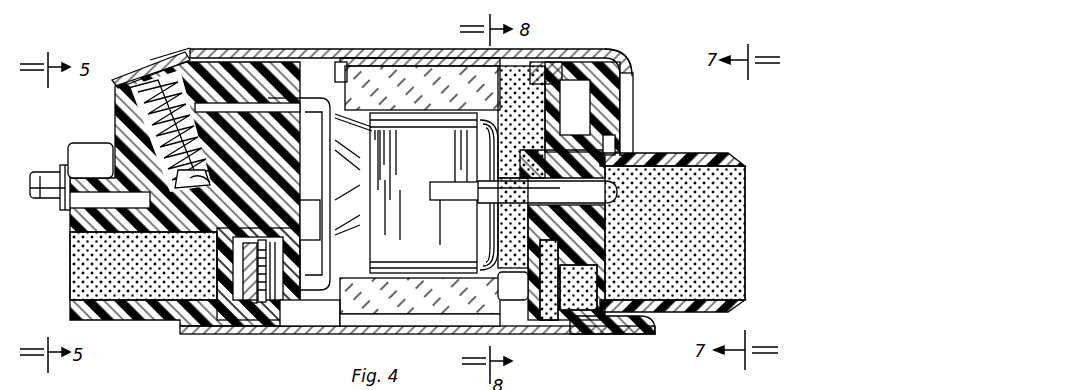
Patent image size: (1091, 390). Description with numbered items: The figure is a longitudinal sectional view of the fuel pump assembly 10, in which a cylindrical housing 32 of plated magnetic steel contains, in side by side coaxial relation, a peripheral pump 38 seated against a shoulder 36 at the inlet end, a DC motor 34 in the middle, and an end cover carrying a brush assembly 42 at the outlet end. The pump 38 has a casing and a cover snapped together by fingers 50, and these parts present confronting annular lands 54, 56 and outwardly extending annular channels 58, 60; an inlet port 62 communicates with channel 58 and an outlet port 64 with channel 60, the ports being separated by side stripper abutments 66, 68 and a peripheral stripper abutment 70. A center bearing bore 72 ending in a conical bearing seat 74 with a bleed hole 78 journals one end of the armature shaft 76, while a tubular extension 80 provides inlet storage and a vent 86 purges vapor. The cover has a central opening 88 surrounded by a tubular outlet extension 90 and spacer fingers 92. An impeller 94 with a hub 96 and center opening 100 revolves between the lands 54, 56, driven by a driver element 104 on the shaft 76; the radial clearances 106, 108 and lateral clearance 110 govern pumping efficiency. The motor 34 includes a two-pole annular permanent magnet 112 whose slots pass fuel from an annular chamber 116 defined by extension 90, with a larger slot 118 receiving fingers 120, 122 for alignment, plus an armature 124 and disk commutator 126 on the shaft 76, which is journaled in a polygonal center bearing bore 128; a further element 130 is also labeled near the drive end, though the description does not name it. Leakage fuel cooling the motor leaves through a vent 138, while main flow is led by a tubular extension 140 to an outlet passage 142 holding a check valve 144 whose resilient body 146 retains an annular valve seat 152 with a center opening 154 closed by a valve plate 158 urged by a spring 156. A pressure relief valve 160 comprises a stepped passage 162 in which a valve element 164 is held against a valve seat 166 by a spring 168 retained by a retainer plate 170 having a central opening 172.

The fuel pump assembly 10 is at (342, 62).
The cylindrical housing 32 is at (282, 62).
The DC motor 34 is at (364, 70).
The shoulder 36 is at (630, 56).
The peripheral pump 38 is at (700, 155).
The brush assembly 42 is at (60, 210).
The fingers 50 is at (535, 320).
The annular land 54 is at (615, 140).
The annular land 56 is at (552, 152).
The annular channel 58 is at (620, 100).
The annular channel 60 is at (525, 118).
The inlet port 62 is at (597, 282).
The outlet port 64 is at (545, 258).
The side stripper abutment 66 is at (618, 324).
The side stripper abutment 68 is at (552, 320).
The peripheral stripper abutment 70 is at (575, 320).
The center bearing bore 72 is at (618, 215).
The bearing seat 74 is at (617, 178).
The armature shaft 76 is at (505, 190).
The bleed hole 78 is at (625, 196).
The tubular extension 80 is at (728, 165).
The vent 86 is at (633, 112).
The central opening 88 is at (575, 107).
The tubular outlet extension 90 is at (498, 105).
The spacer fingers 92 is at (500, 312).
The impeller 94 is at (513, 286).
The hub 96 is at (600, 245).
The center opening 100 is at (600, 192).
The driver element 104 is at (498, 235).
The radial clearance 106 is at (568, 330).
The radial clearance 108 is at (580, 50).
The lateral clearance 110 is at (650, 73).
The permanent magnet 112 is at (335, 334).
The annular chamber 116 is at (535, 52).
The slot 118 is at (415, 49).
The finger 120 is at (440, 50).
The finger 122 is at (385, 58).
The armature 124 is at (415, 270).
The disk commutator 126 is at (360, 140).
The center bearing bore 128 is at (225, 238).
The drive hub 130 is at (47, 172).
The vent 138 is at (262, 103).
The tubular extension 140 is at (300, 98).
The outlet passage 142 is at (85, 283).
The check valve 144 is at (222, 328).
The body 146 is at (185, 330).
The annular valve seat 152 is at (272, 302).
The center opening 154 is at (310, 313).
The spring 156 is at (255, 302).
The valve plate 158 is at (243, 268).
The pressure relief valve 160 is at (135, 113).
The stepped passage 162 is at (195, 62).
The valve element 164 is at (175, 177).
The valve seat 166 is at (200, 180).
The spring 168 is at (160, 127).
The retainer plate 170 is at (145, 80).
The central opening 172 is at (168, 85).